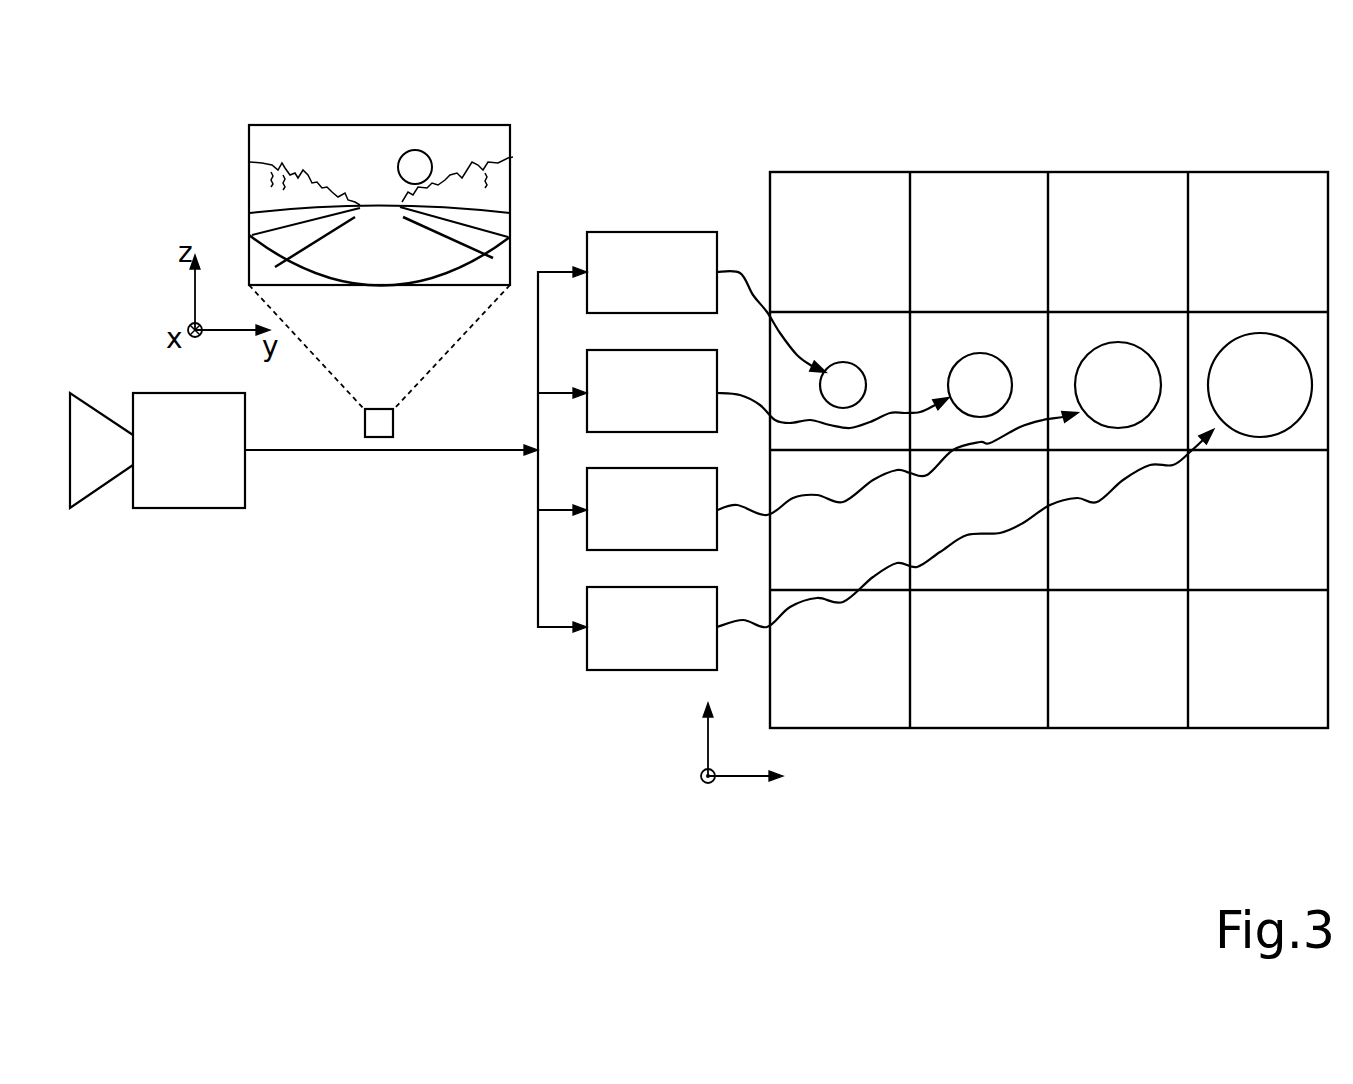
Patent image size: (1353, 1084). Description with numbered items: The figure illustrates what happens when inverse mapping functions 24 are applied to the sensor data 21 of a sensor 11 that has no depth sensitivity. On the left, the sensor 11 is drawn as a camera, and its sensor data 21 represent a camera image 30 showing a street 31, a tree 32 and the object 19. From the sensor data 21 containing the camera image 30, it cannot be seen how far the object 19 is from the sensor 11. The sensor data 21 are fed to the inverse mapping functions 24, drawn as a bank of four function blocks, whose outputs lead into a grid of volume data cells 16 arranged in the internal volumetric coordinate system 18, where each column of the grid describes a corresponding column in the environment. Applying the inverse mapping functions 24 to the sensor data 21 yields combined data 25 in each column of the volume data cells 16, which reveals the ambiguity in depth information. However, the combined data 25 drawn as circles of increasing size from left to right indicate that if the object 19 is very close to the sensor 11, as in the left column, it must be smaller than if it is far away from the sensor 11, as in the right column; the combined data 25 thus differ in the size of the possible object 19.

The sensor 11 is at (193, 508).
The volume data cells 16 is at (838, 198).
The internal volumetric coordinate system 18 is at (750, 810).
The object 19 is at (413, 150).
The sensor data 21 is at (380, 437).
The inverse mapping functions 24 is at (646, 173).
The combined data 25 is at (843, 362).
The camera image 30 is at (478, 125).
The street 31 is at (402, 268).
The tree 32 is at (280, 163).